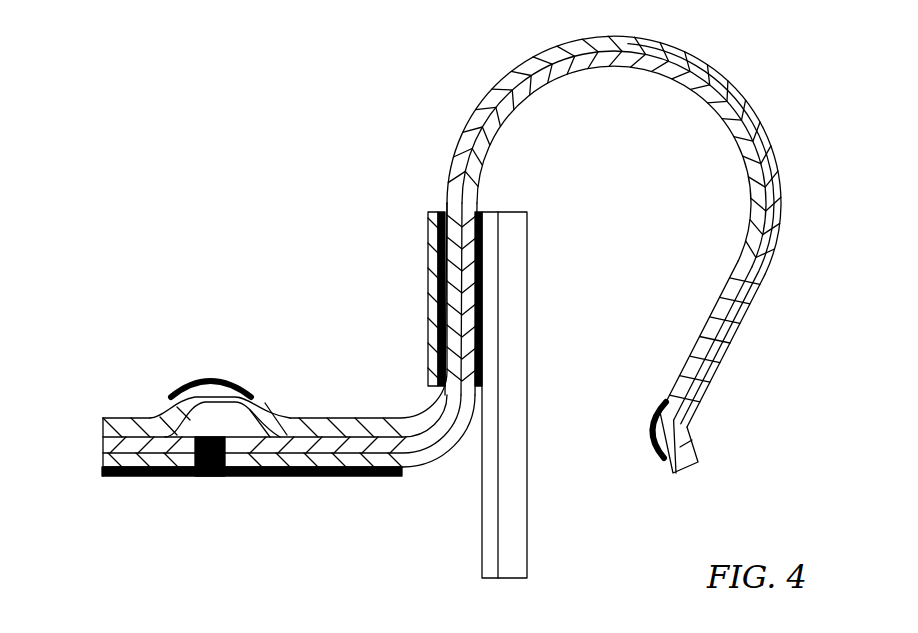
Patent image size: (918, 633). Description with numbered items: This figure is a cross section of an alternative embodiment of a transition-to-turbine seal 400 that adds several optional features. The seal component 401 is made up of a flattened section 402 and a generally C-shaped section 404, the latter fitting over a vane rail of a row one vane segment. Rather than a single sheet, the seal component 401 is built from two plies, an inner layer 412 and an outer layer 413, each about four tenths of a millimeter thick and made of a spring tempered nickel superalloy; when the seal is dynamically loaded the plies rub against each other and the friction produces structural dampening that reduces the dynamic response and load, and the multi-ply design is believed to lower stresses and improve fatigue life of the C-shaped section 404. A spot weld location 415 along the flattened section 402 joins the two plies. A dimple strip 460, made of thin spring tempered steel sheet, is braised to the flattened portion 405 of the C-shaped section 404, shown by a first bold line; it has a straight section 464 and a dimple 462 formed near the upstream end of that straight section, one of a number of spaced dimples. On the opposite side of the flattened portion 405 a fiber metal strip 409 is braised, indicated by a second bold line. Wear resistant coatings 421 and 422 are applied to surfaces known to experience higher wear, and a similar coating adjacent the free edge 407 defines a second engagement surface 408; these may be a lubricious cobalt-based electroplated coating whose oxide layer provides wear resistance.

The transition-to-turbine seal 400 is at (433, 291).
The seal component 401 is at (520, 65).
The flattened section 402 is at (117, 472).
The C-shaped section 404 is at (688, 52).
The flattened portion 405 is at (460, 242).
The free edge 407 is at (697, 466).
The second engagement surface 408 is at (657, 432).
The fiber metal strip 409 is at (527, 320).
The inner layer 412 is at (727, 130).
The outer layer 413 is at (755, 107).
The spot weld location 415 is at (202, 473).
The wear resistant coating 421 is at (348, 472).
The wear resistant coating 422 is at (208, 395).
The dimple strip 460 is at (440, 298).
The dimple 462 is at (182, 393).
The straight section 464 is at (330, 418).